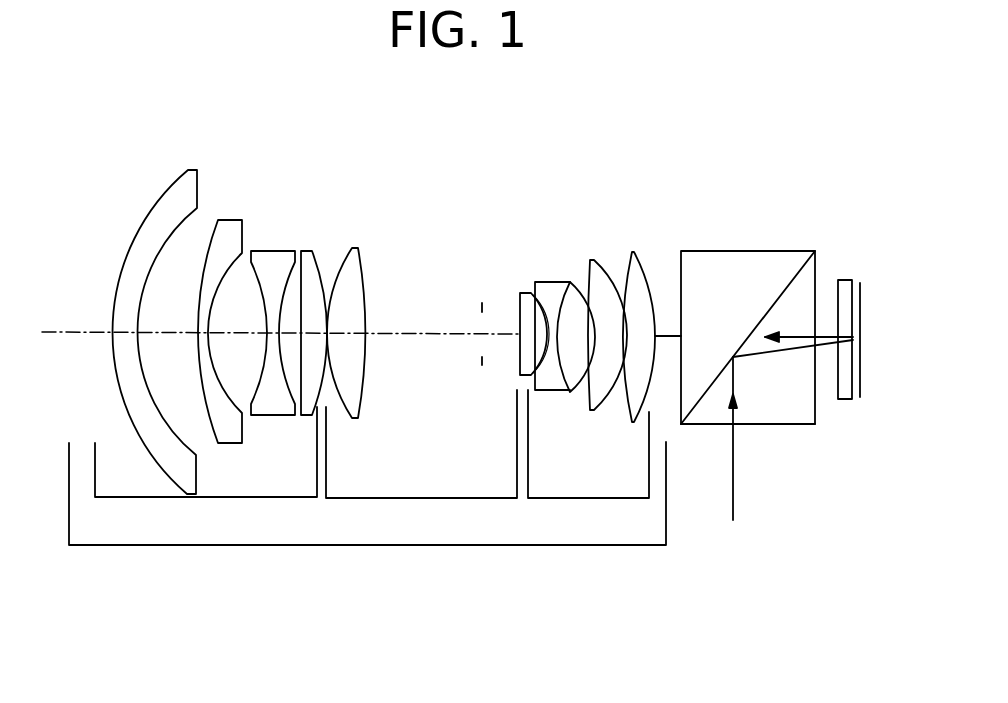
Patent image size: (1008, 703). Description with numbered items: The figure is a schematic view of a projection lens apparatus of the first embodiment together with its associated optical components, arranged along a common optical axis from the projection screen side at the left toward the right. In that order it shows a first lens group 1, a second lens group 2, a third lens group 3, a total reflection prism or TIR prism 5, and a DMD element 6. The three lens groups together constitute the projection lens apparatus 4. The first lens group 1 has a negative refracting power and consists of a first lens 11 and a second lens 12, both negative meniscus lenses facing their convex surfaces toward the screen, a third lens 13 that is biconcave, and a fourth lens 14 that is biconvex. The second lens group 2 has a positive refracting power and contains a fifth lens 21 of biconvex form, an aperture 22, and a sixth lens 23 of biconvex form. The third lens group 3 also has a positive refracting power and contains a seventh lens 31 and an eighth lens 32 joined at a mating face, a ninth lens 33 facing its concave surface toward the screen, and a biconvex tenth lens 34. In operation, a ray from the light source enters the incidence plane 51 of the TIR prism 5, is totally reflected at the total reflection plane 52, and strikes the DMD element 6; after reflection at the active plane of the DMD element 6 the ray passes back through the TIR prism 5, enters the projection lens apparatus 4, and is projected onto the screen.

The first lens group 1 is at (211, 329).
The second lens group 2 is at (437, 370).
The third lens group 3 is at (581, 360).
The projection lens apparatus 4 is at (367, 356).
The total reflection prism (TIR prism) 5 is at (707, 251).
The DMD element 6 is at (846, 280).
The first lens 11 is at (194, 170).
The second lens 12 is at (232, 220).
The third lens 13 is at (275, 251).
The fourth lens 14 is at (310, 251).
The fifth lens 21 is at (356, 248).
The aperture 22 is at (454, 328).
The sixth lens 23 is at (519, 294).
The seventh lens 31 is at (545, 282).
The eighth lens 32 is at (571, 281).
The ninth lens 33 is at (592, 260).
The tenth lens 34 is at (633, 252).
The incidence plane 51 is at (788, 426).
The total reflection plane 52 is at (788, 284).